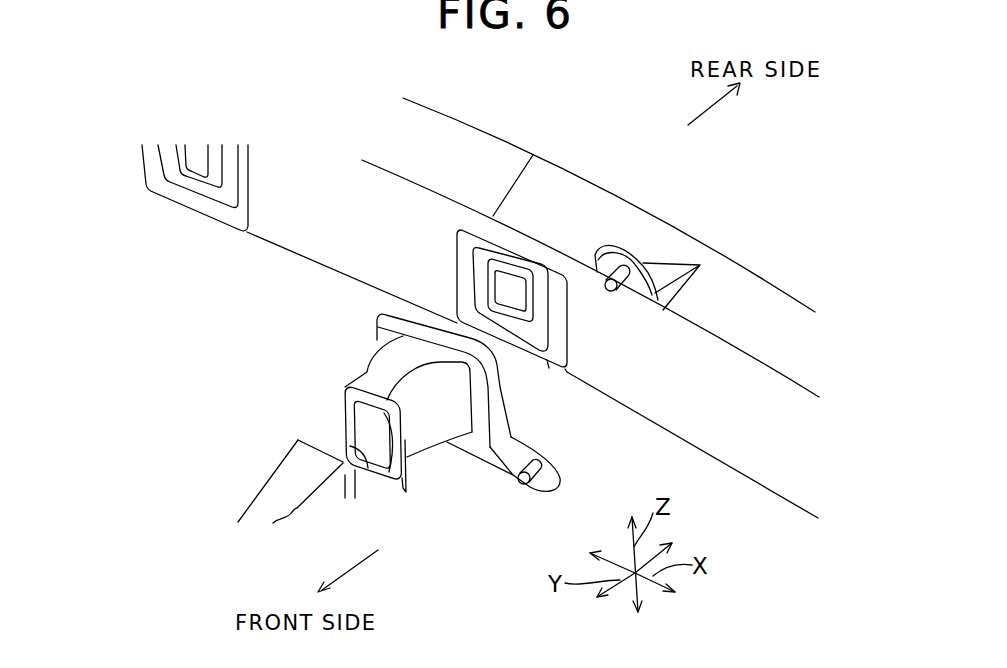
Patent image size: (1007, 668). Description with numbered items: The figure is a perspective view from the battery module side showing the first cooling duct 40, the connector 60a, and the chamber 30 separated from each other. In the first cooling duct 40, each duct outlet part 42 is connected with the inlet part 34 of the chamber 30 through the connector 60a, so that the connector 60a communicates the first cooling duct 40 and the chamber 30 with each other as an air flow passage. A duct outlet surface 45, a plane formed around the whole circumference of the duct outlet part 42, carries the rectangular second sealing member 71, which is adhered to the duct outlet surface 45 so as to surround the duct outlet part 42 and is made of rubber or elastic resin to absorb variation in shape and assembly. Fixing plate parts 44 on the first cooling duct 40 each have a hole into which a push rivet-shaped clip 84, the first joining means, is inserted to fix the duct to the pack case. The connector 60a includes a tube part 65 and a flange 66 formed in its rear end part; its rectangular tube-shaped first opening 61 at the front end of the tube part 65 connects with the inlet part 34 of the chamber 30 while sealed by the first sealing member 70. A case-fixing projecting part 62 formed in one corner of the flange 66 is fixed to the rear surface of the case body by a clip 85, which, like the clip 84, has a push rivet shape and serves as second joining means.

The chamber 30 is at (262, 489).
The inlet part 34 is at (318, 447).
The first cooling duct 40 is at (745, 269).
The duct outlet part 42 is at (500, 289).
The fixing plate part 44 is at (610, 256).
The duct outlet surface 45 is at (535, 272).
The connector 60a is at (432, 447).
The first opening 61 is at (345, 498).
The case-fixing projecting part 62 is at (556, 465).
The tube part 65 is at (395, 367).
The flange 66 is at (380, 320).
The first sealing member 70 is at (393, 495).
The second sealing member 71 is at (549, 369).
The clip 84 is at (616, 293).
The clip 85 is at (526, 488).